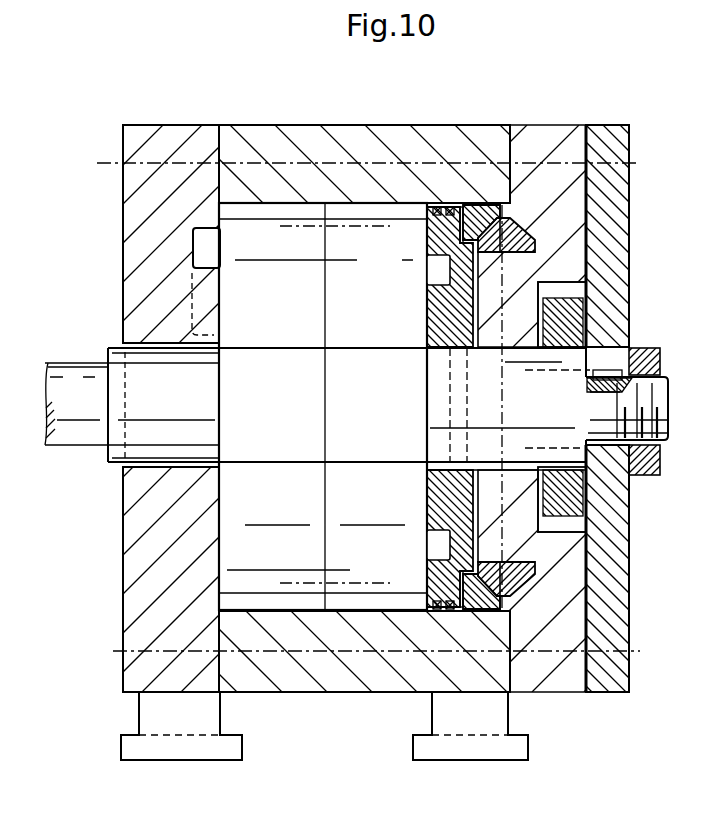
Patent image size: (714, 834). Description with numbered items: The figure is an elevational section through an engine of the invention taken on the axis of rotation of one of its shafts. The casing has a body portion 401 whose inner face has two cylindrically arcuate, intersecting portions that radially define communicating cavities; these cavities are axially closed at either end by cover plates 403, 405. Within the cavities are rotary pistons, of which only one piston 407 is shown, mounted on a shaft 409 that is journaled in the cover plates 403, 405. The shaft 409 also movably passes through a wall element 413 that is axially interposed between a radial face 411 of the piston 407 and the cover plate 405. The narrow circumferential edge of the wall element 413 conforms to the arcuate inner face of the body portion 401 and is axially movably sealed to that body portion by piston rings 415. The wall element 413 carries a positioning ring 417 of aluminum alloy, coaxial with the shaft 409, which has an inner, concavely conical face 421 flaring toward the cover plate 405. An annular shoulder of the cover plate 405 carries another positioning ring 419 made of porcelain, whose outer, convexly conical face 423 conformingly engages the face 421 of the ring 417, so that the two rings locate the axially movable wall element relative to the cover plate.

The body portion 401 is at (296, 130).
The cover plate 403 is at (145, 130).
The cover plate 405 is at (553, 130).
The rotary piston 407 is at (279, 314).
The shaft 409 is at (110, 462).
The radial face 411 is at (428, 303).
The wall element 413 is at (430, 337).
The piston rings 415 is at (438, 204).
The positioning ring 417 is at (477, 215).
The positioning ring 419 is at (518, 257).
The concavely conical face 421 is at (468, 232).
The convexly conical face 423 is at (513, 228).